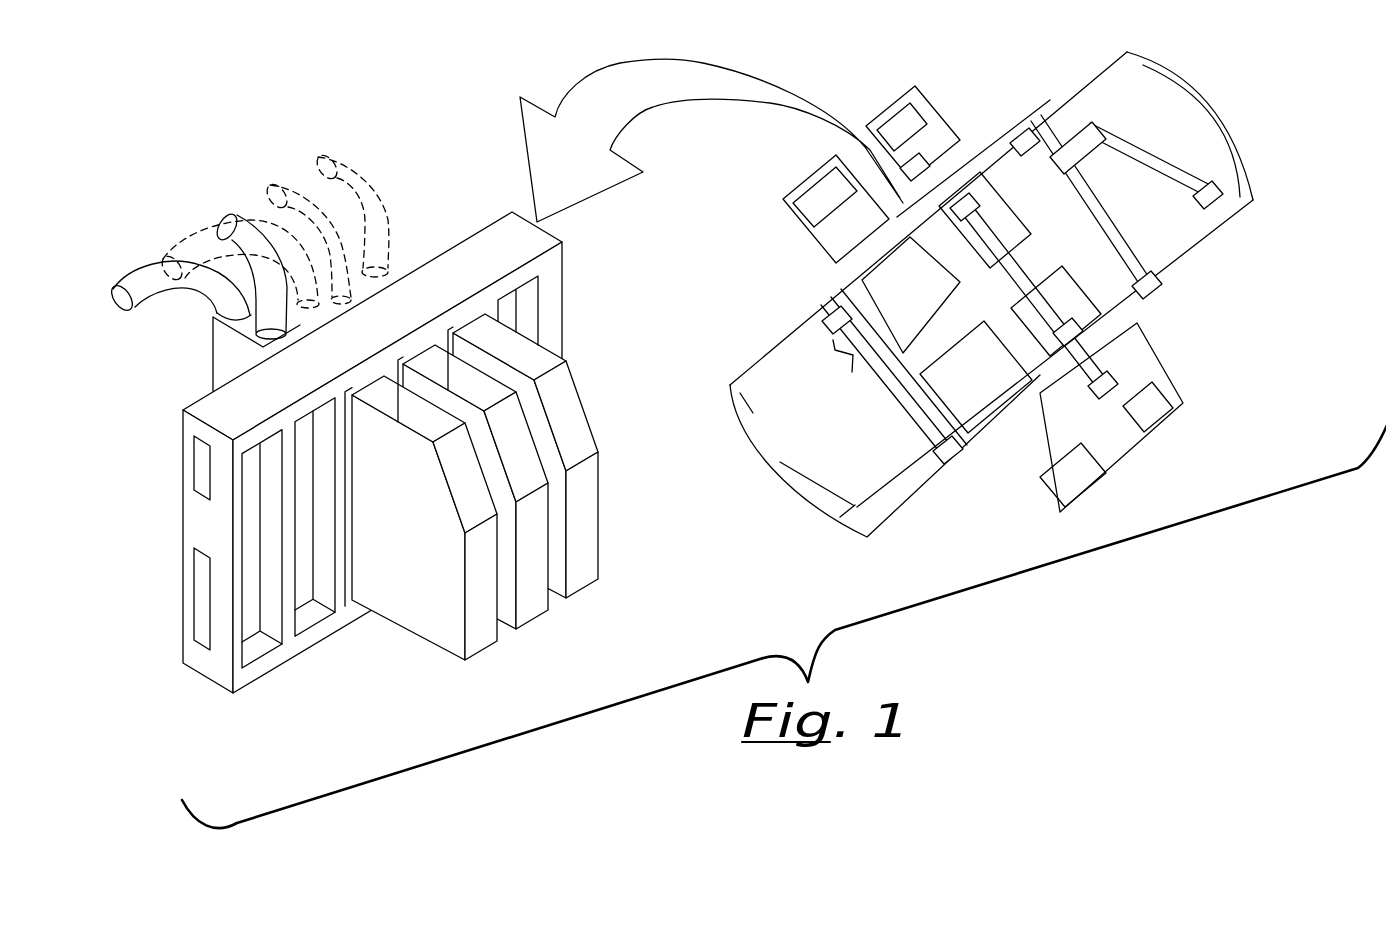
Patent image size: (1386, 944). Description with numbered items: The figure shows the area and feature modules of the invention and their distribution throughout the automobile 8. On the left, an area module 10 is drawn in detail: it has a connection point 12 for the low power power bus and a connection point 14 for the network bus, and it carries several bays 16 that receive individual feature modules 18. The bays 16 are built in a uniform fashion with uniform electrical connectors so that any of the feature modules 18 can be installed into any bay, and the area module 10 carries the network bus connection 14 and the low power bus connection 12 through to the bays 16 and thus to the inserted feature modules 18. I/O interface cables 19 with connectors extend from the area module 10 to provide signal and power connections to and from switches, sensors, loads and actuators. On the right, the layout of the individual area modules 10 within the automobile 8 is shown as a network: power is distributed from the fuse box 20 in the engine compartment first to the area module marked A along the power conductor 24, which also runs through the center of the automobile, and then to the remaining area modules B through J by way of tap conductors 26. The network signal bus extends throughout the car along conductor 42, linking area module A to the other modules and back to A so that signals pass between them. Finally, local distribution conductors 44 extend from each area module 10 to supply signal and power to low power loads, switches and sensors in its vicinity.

The automobile 8 is at (1272, 232).
The area module 10 is at (447, 208).
The connection point for the low power power bus 12 is at (200, 577).
The connection point for the network bus 14 is at (200, 468).
The bays 16 is at (351, 503).
The feature modules 18 is at (478, 637).
The I/O interface cables 19 is at (253, 283).
The fuse box 20 is at (1062, 125).
The power conductor 24 is at (950, 335).
The tap conductors 26 is at (858, 338).
The conductor for the network (signal) bus 42 is at (878, 282).
The local distribution conductors 44 is at (1212, 128).